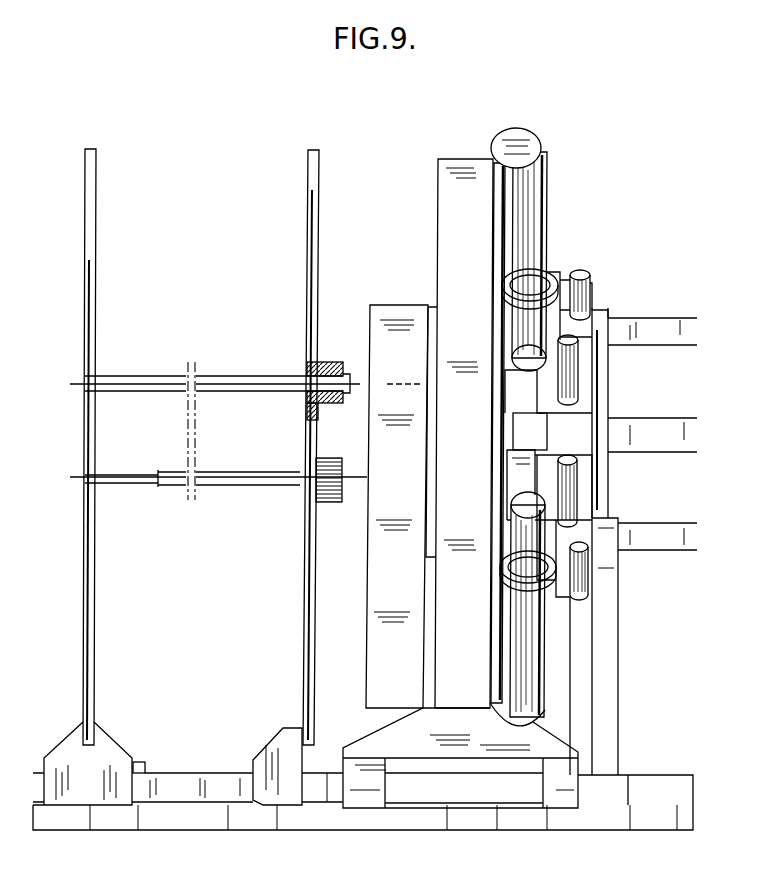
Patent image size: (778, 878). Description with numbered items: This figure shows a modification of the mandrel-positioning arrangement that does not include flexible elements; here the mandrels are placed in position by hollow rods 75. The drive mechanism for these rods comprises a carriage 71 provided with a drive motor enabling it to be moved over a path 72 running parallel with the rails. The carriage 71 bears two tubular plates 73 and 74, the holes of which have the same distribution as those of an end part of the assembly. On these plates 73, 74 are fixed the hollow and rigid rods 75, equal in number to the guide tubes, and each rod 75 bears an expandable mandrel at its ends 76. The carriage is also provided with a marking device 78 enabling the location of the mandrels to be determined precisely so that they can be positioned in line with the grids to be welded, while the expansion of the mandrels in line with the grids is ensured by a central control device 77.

The carriage 71 is at (68, 807).
The path 72 is at (208, 794).
The tubular plate 73 is at (95, 207).
The tubular plate 74 is at (313, 197).
The hollow rod 75 is at (213, 473).
The rod end 76 is at (385, 382).
The central control device 77 is at (128, 473).
The marking device 78 is at (143, 765).